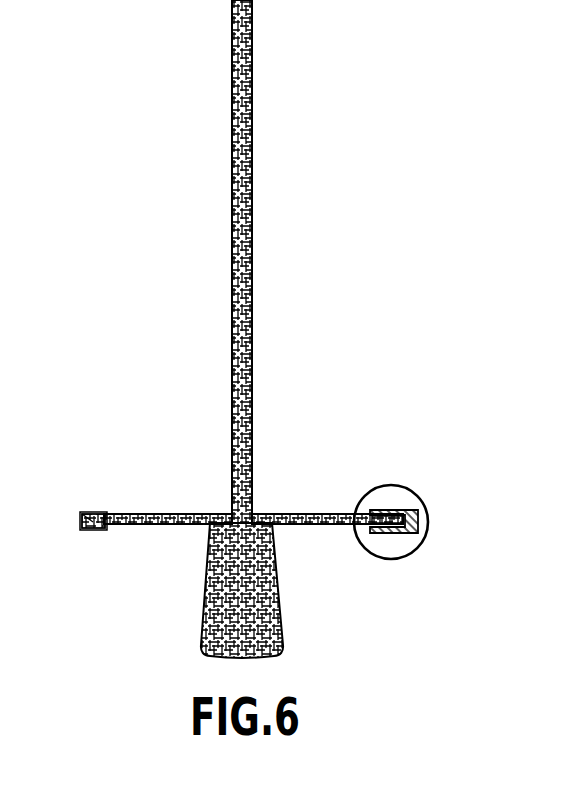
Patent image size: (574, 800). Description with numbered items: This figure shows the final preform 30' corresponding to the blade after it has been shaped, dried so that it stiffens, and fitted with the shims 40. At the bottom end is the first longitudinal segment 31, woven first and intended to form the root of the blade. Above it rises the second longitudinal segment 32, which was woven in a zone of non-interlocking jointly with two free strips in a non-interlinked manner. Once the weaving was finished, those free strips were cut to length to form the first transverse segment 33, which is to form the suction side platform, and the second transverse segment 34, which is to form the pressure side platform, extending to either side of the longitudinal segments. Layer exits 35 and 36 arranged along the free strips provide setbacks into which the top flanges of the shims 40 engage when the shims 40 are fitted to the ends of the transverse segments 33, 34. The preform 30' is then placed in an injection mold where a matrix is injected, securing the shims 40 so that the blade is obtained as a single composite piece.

The final preform 30' is at (248, 329).
The first longitudinal segment 31 is at (262, 607).
The second longitudinal segment 32 is at (252, 218).
The first transverse segment 33 is at (346, 512).
The second transverse segment 34 is at (138, 514).
The layer exit 35 is at (385, 512).
The layer exit 36 is at (95, 514).
The shim 40 is at (82, 521).